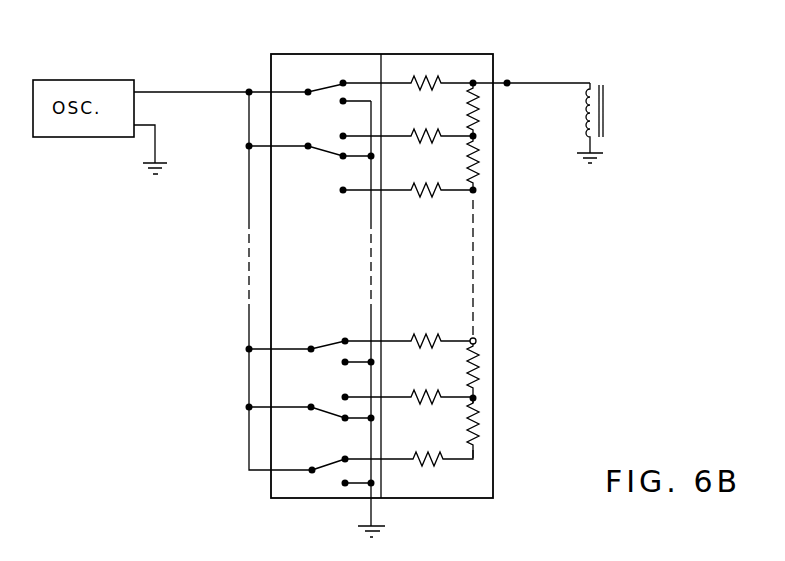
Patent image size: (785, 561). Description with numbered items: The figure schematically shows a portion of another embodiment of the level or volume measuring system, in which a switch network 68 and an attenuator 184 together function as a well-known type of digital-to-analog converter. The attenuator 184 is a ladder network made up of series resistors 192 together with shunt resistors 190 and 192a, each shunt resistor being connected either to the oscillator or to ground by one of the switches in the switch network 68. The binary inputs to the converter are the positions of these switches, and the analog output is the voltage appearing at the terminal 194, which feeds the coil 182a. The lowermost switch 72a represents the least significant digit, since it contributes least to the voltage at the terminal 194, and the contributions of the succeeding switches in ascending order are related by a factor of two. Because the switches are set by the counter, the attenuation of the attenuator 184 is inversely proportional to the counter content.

The switch network 68 is at (327, 63).
The lowermost switch 72a is at (328, 475).
The coil / transformer winding 182a is at (580, 75).
The attenuator 184 is at (485, 427).
The series resistors 190 is at (476, 160).
The series resistors 192 is at (425, 192).
The shunt resistor 192a is at (427, 466).
The terminal 194 is at (507, 83).